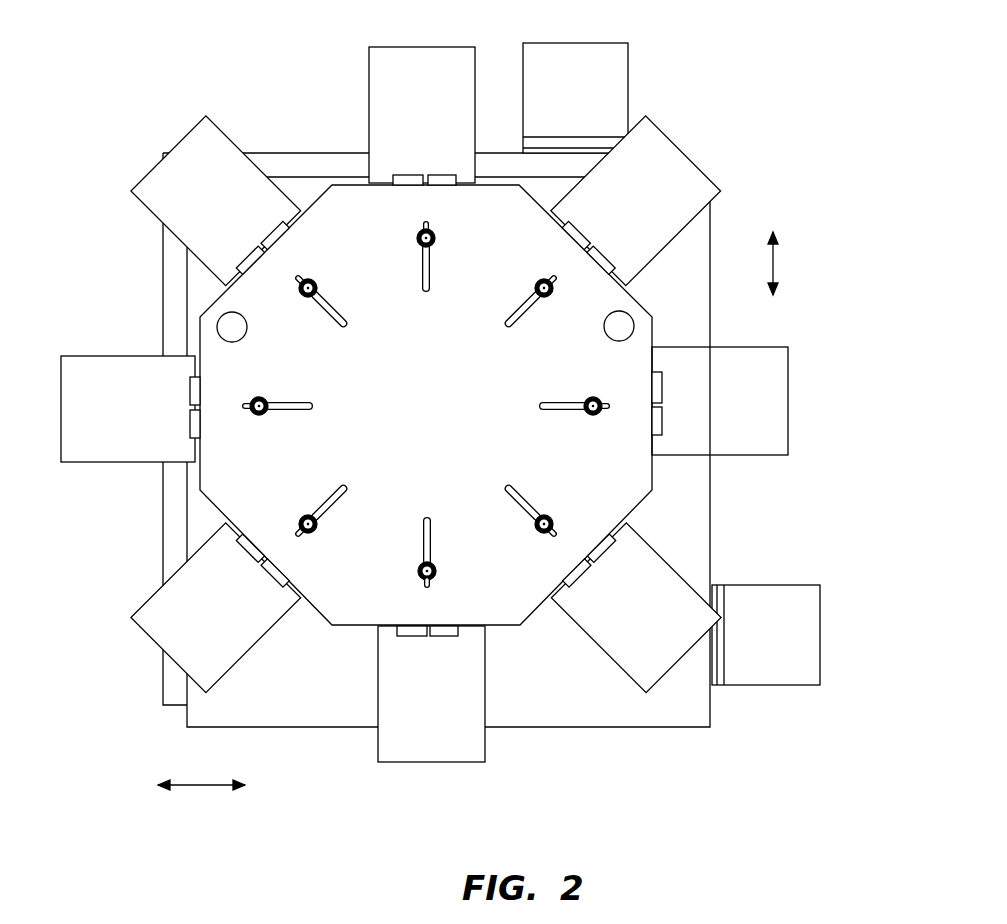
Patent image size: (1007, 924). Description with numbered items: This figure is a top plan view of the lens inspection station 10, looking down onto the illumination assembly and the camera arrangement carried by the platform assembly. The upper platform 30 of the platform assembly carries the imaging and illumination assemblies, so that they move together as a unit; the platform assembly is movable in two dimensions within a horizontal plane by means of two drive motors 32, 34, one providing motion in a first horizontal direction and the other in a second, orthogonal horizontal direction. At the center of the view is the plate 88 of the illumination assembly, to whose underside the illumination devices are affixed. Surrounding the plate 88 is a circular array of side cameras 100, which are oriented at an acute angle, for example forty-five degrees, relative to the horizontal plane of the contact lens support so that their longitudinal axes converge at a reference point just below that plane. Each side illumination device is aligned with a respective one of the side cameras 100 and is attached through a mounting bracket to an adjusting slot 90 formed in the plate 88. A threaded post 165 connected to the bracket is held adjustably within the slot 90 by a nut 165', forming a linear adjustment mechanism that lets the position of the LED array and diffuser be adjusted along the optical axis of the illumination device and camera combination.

The lens inspection station 10 is at (448, 395).
The upper platform 30 is at (698, 516).
The drive motor 32 is at (783, 583).
The drive motor 34 is at (617, 70).
The plate 88 is at (510, 612).
The adjusting slot 90 is at (293, 397).
The side camera 100 is at (412, 55).
The threaded post 165 is at (470, 550).
The nut 165' is at (469, 593).